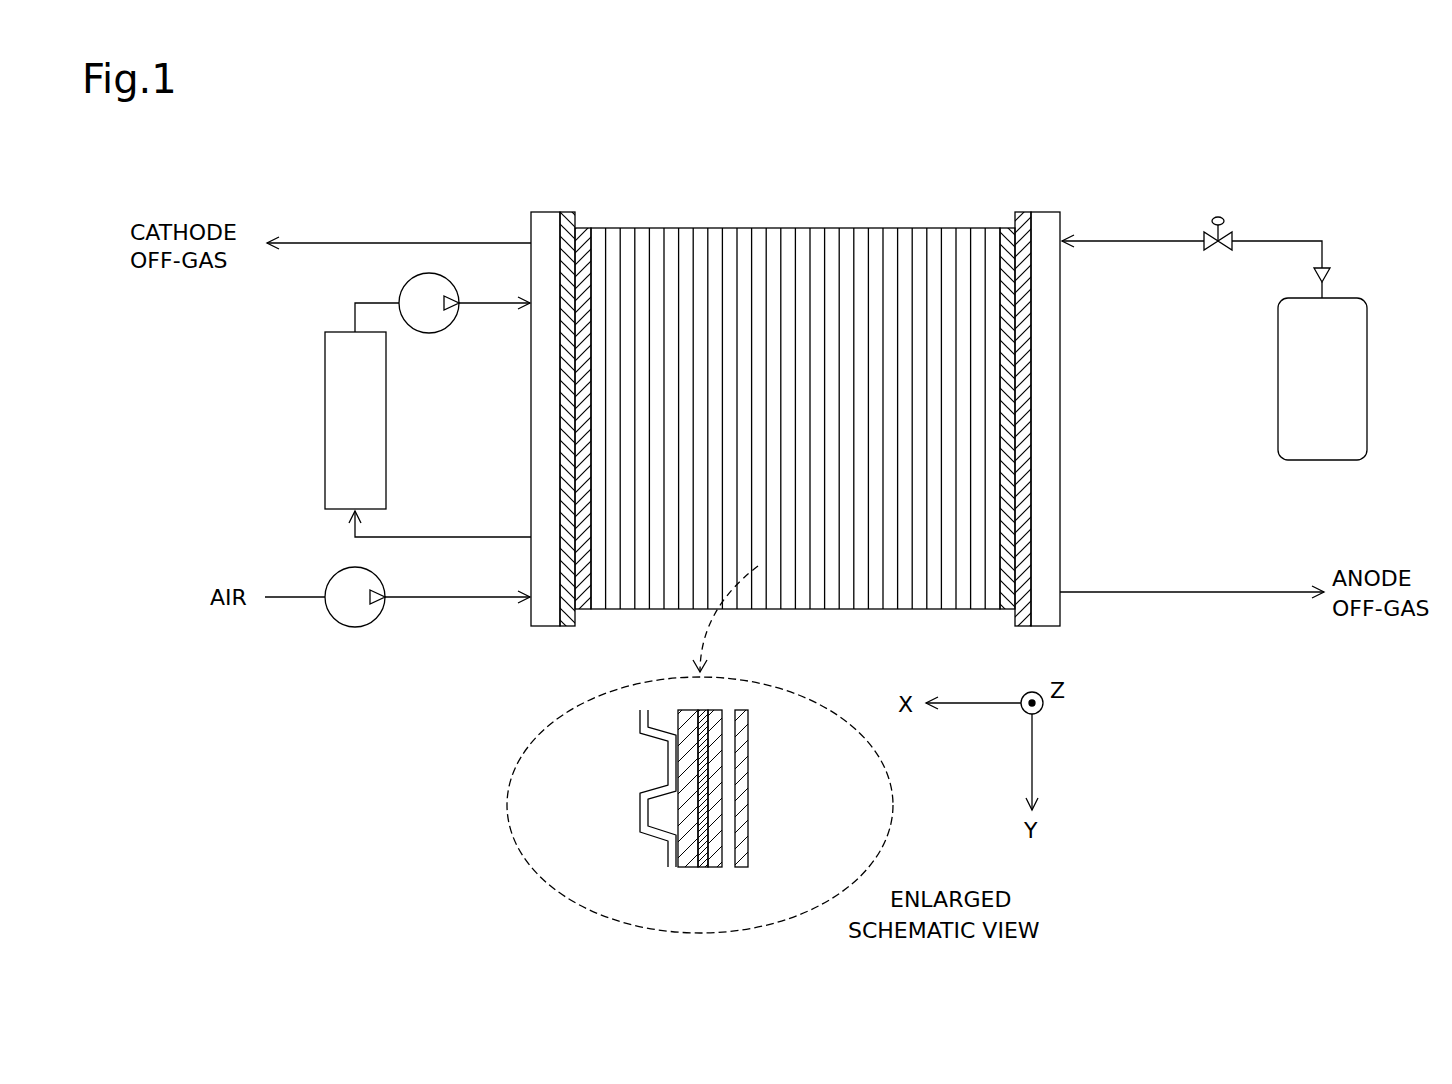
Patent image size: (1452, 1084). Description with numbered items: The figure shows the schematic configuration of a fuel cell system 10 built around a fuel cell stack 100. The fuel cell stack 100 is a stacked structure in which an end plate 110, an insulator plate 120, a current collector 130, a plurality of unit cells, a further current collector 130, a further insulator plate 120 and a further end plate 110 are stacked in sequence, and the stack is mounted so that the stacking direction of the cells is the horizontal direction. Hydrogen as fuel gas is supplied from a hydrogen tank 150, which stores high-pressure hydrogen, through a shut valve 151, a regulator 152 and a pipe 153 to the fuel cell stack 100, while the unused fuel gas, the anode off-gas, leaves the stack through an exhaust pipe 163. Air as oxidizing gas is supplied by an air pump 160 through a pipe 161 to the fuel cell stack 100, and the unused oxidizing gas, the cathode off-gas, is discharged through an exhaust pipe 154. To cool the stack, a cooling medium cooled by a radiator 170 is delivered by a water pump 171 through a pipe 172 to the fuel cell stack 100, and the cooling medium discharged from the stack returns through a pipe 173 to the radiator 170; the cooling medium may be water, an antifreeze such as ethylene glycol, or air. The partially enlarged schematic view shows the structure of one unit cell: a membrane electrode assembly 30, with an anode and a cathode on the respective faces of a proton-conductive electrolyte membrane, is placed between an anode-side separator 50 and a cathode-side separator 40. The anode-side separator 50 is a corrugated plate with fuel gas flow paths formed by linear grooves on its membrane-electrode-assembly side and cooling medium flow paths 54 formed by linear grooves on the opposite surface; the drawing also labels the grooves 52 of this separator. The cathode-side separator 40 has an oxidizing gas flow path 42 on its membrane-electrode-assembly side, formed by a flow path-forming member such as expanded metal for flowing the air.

The fuel cell system 10 is at (393, 133).
The fuel cell stack 100 is at (1060, 124).
The end plate 110 is at (549, 211).
The insulator plate 120 is at (566, 218).
The current collector 130 is at (583, 226).
The hydrogen tank 150 is at (1367, 368).
The shut valve 151 is at (1332, 284).
The regulator 152 is at (1222, 244).
The pipe 153 is at (1176, 241).
The exhaust pipe 154 is at (432, 243).
The air pump 160 is at (352, 627).
The pipe 161 is at (452, 598).
The exhaust pipe 163 is at (1266, 592).
The radiator 170 is at (325, 420).
The water pump 171 is at (432, 333).
The pipe 172 is at (484, 303).
The pipe 173 is at (416, 537).
The membrane electrode assembly 30 is at (722, 872).
The cathode-side separator 40 is at (748, 787).
The oxidizing gas flow path 42 is at (731, 862).
The anode-side separator 50 is at (668, 856).
The anode-side groove 52 is at (632, 715).
The cooling medium flow paths 54 is at (636, 768).